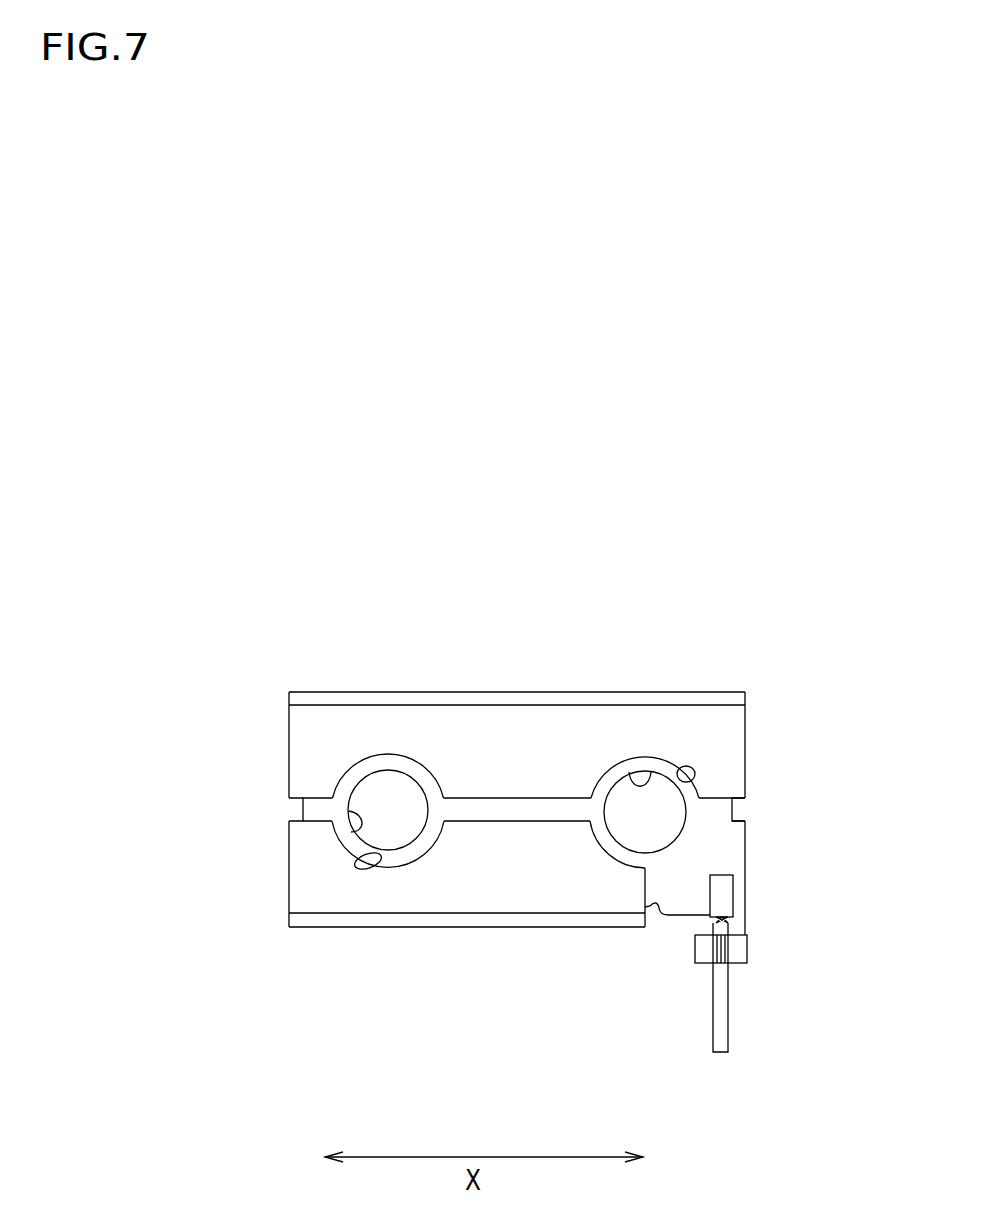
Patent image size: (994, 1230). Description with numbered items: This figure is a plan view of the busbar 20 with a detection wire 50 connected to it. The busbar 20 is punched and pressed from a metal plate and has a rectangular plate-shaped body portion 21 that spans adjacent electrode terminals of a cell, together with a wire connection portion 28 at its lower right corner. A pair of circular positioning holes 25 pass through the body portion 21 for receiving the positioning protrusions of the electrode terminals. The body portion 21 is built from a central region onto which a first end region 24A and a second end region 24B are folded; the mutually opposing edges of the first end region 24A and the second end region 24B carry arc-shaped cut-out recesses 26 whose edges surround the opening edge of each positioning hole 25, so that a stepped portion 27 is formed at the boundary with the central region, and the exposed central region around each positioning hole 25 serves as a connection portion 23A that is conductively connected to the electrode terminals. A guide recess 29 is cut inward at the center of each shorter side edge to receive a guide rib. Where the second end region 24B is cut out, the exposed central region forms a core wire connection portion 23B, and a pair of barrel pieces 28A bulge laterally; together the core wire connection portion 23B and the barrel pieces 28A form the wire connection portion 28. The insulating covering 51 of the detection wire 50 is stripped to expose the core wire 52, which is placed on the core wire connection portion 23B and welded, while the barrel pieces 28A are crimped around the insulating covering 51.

The busbar 20 is at (728, 622).
The body portion 21 is at (354, 690).
The connection portion 23A is at (387, 760).
The core wire connection portion 23B is at (738, 887).
The first end region 24A is at (510, 730).
The second end region 24B is at (498, 888).
The positioning hole 25 is at (633, 785).
The cut-out recess 26 is at (697, 783).
The stepped portion 27 is at (353, 860).
The wire connection portion 28 is at (850, 1040).
The barrel piece 28A is at (703, 953).
The guide recess 29 is at (302, 807).
The detection wire 50 is at (630, 938).
The insulating covering 51 is at (720, 1032).
The core wire 52 is at (717, 900).